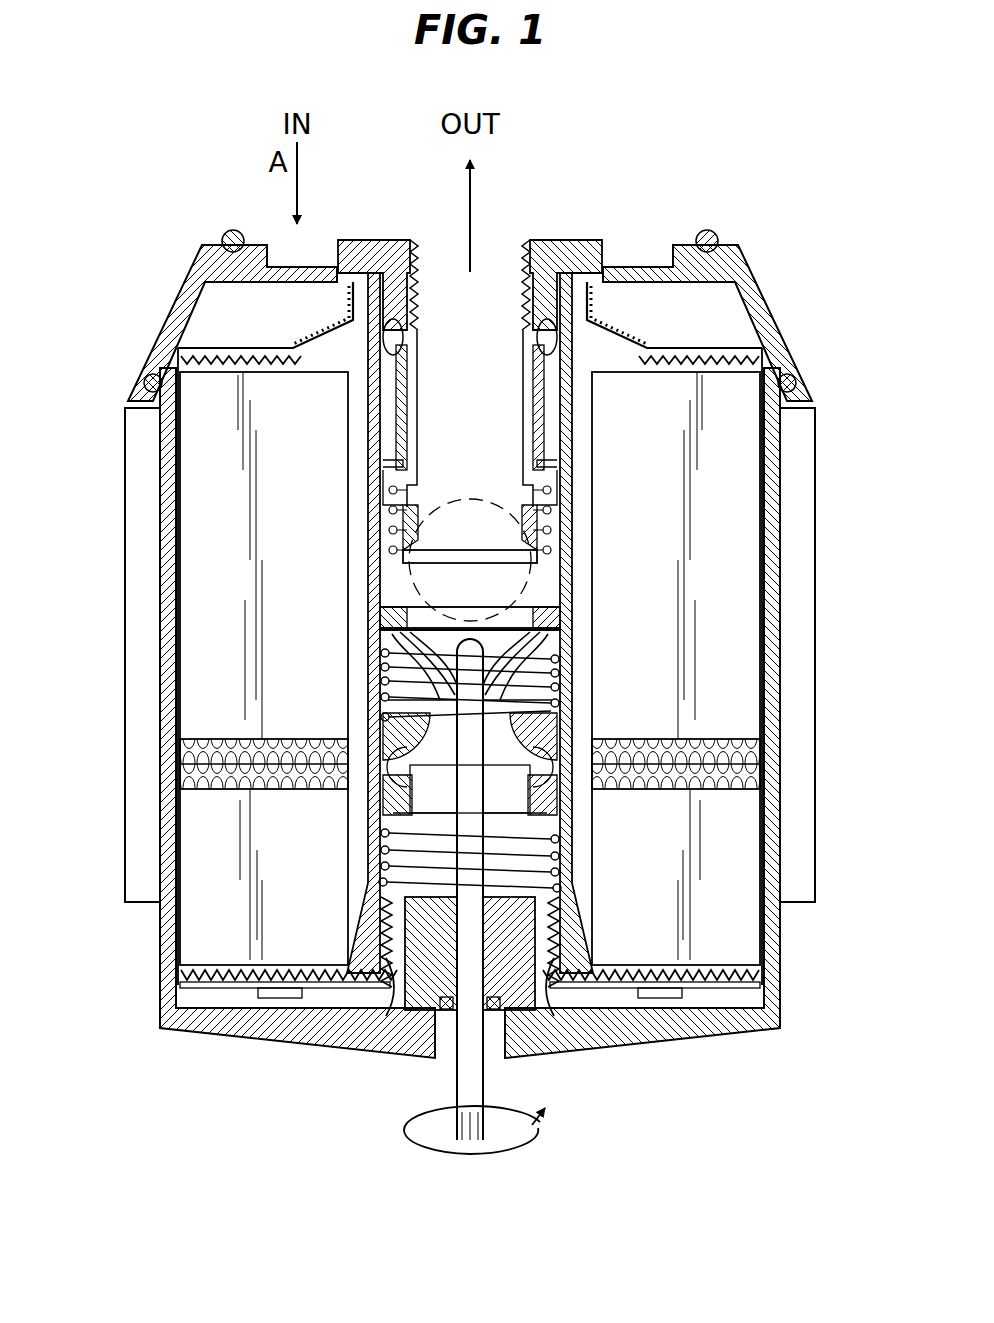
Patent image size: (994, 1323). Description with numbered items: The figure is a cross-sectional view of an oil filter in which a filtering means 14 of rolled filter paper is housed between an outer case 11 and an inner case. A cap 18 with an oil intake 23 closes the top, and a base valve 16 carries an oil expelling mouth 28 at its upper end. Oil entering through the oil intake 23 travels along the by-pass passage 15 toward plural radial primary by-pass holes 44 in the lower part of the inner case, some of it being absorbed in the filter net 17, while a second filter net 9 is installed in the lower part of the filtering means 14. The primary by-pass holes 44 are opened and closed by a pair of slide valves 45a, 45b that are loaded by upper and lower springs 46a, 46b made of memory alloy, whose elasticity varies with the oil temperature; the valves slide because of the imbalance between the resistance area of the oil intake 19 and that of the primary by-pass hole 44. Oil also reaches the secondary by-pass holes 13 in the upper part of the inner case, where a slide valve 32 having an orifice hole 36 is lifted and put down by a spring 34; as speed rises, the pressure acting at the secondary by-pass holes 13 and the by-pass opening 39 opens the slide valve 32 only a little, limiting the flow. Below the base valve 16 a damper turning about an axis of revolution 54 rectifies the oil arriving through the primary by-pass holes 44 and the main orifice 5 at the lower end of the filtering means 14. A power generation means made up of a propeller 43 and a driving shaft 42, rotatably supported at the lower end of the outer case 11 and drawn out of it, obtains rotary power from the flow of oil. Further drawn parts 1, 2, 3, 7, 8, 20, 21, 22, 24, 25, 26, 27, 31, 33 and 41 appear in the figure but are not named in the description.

The fluid filter 1 is at (166, 633).
The housing 2 is at (142, 548).
The valve body 3 is at (573, 890).
The main orifice 5 is at (390, 1012).
The bottom plate 7 is at (180, 1000).
The notch 8 is at (270, 997).
The filter net 9 is at (230, 962).
The outer case 11 is at (573, 604).
The secondary by-pass holes 13 is at (321, 300).
The filtering means 14 is at (207, 449).
The by-pass passage 15 is at (232, 353).
The base valve 16 is at (638, 300).
The filter net 17 is at (217, 345).
The cap 18 is at (790, 360).
The oil intake 19 is at (733, 327).
The seal 20 is at (633, 340).
The O-ring 21 is at (682, 247).
The outlet pipe 22 is at (596, 262).
The oil intake 23 is at (278, 247).
The inner tube 24 is at (358, 285).
The inlet passage 25 is at (616, 234).
The flange 26 is at (720, 240).
The threads 27 is at (538, 265).
The oil expelling mouth 28 is at (492, 262).
The valve seat 31 is at (565, 533).
The slide valve 32 is at (533, 383).
The sleeve 33 is at (573, 440).
The spring 34 is at (405, 498).
The orifice hole 36 is at (560, 505).
The by-pass opening 39 is at (398, 400).
The drain channel 41 is at (562, 1042).
The driving shaft 42 is at (540, 1115).
The propeller 43 is at (573, 640).
The primary by-pass holes 44 is at (572, 758).
The slide valve 45a is at (380, 740).
The slide valve 45b is at (383, 795).
The spring 46a is at (380, 660).
The spring 46b is at (388, 850).
The axis of revolution 54 is at (385, 563).